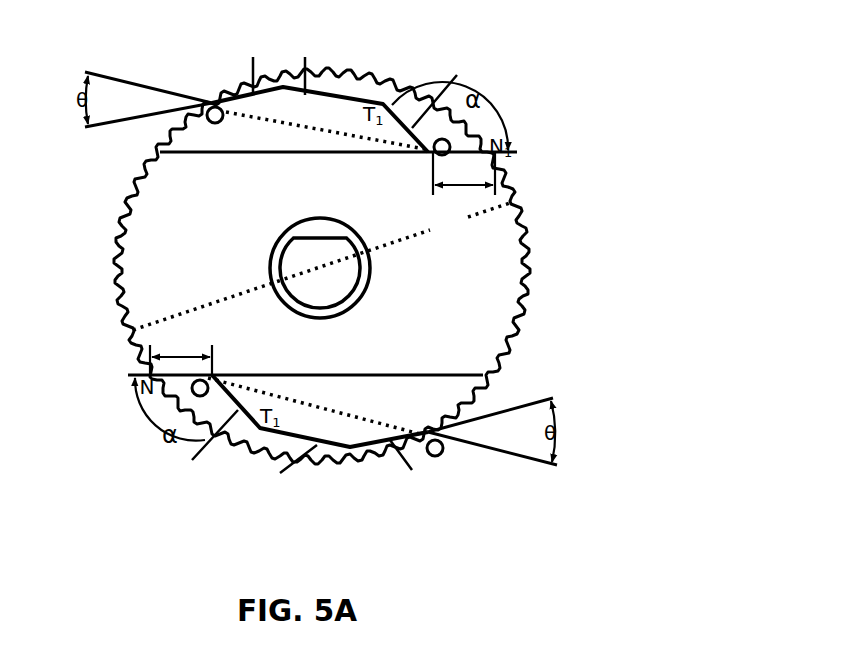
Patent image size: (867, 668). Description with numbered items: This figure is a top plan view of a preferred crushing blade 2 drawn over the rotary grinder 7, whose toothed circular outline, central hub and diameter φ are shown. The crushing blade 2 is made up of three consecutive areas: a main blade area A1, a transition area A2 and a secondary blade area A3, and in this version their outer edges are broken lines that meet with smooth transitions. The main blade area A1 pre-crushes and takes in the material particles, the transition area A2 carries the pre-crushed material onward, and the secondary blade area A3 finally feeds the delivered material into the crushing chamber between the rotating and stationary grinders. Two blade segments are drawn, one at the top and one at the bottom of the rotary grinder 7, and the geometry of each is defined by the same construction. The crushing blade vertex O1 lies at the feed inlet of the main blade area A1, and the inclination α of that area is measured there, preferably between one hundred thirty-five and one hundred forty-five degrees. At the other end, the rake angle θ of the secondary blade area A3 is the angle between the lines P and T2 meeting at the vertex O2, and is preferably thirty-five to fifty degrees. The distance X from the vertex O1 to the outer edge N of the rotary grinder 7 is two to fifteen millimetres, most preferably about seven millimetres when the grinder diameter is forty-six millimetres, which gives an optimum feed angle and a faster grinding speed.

The crushing blade 2 is at (320, 117).
The rotary grinder 7 is at (173, 258).
The crushing blade vertex O1 is at (326, 271).
The rake angle vertex O2 is at (330, 285).
The rake angle reference line P is at (321, 268).
The rake angle tangent line T2 is at (319, 267).
The distance from blade vertex to grinder edge X is at (322, 263).
The main blade area A1 is at (322, 265).
The transition area A2 is at (286, 262).
The secondary blade area A3 is at (341, 265).